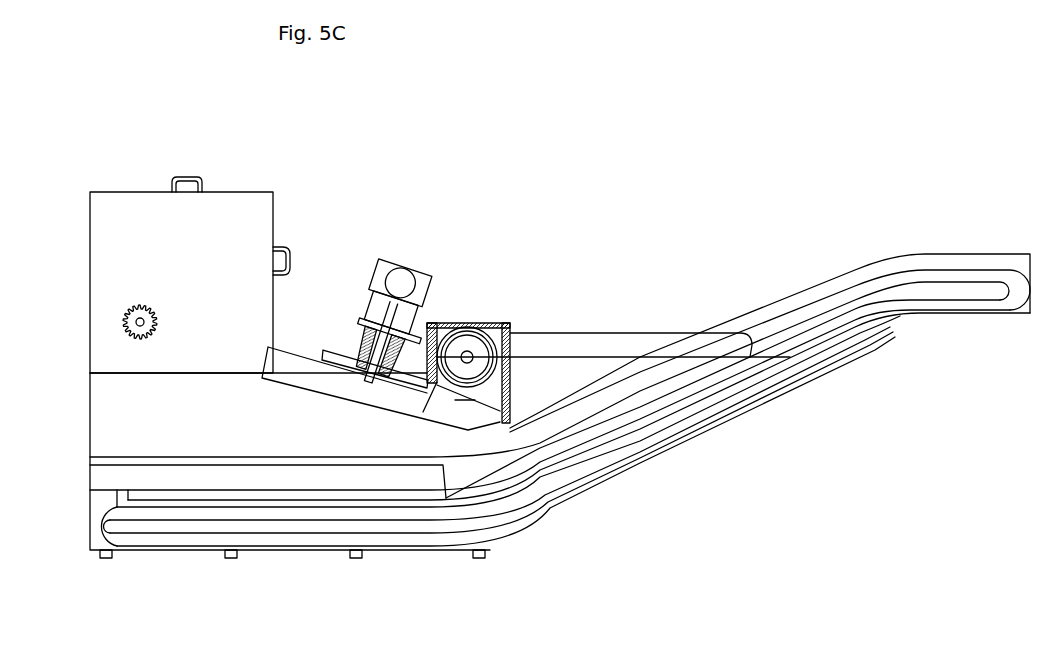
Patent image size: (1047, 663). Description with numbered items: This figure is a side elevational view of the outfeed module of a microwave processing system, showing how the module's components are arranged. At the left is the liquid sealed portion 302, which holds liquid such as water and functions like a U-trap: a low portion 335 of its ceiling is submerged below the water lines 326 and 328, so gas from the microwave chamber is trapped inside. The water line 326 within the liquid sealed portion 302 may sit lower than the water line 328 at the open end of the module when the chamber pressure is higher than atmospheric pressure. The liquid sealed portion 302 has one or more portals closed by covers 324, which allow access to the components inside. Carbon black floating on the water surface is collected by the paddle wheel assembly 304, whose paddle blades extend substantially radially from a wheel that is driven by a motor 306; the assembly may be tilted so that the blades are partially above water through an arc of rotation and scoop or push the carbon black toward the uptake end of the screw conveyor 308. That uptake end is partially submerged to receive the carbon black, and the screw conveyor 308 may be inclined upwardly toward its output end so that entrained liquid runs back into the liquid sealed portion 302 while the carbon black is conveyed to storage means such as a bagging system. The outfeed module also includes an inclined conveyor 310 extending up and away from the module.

The liquid sealed portion 302 is at (86, 188).
The paddle wheel assembly 304 is at (324, 398).
The motor 306 is at (411, 260).
The screw conveyor 308 is at (463, 342).
The inclined conveyor 310 is at (782, 332).
The covers 324 is at (149, 190).
The water line 326 is at (258, 372).
The water line 328 is at (598, 355).
The low portion 335 is at (462, 402).